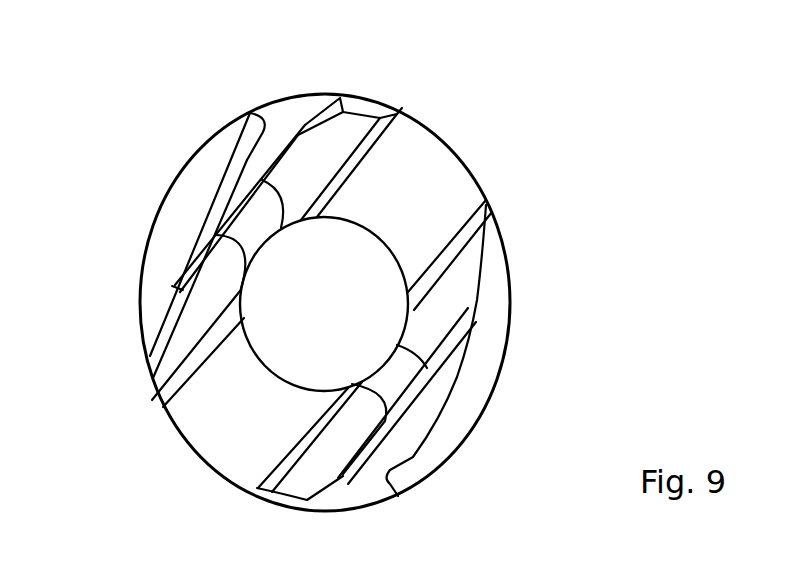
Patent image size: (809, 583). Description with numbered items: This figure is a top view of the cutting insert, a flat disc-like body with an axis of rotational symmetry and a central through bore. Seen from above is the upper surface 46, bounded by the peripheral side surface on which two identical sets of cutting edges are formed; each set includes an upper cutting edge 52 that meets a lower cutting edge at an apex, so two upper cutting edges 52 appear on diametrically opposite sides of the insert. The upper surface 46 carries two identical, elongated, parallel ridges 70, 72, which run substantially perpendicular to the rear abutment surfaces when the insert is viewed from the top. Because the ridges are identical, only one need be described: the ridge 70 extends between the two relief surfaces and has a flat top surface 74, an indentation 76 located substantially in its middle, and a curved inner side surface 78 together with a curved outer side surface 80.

The upper surface 46 is at (228, 420).
The upper cutting edge 52 is at (172, 182).
The ridge 70 is at (183, 331).
The ridge 72 is at (441, 320).
The flat top surface 74 is at (330, 141).
The indentation 76 is at (230, 213).
The inner side surface 78 is at (366, 141).
The outer side surface 80 is at (203, 261).